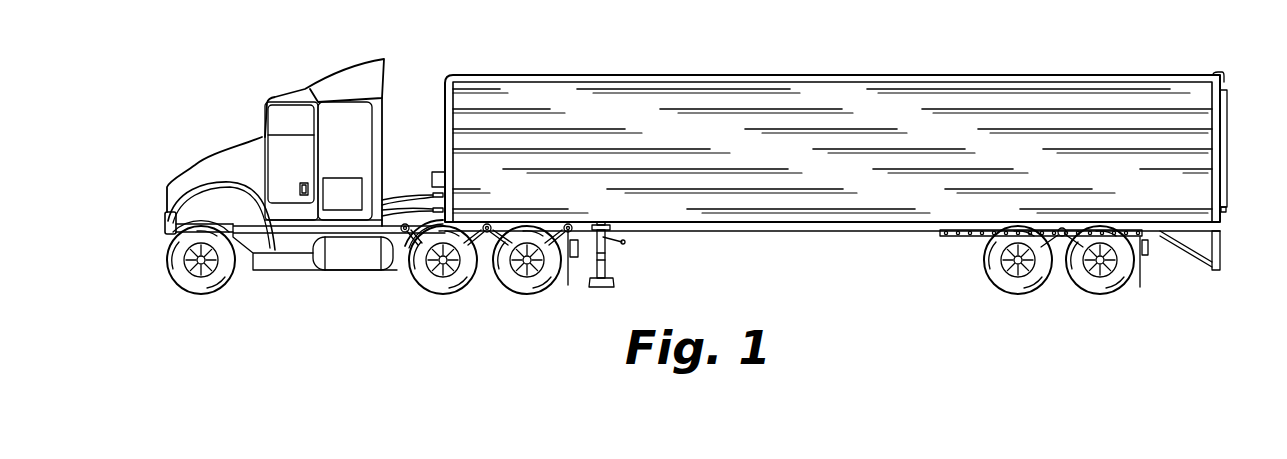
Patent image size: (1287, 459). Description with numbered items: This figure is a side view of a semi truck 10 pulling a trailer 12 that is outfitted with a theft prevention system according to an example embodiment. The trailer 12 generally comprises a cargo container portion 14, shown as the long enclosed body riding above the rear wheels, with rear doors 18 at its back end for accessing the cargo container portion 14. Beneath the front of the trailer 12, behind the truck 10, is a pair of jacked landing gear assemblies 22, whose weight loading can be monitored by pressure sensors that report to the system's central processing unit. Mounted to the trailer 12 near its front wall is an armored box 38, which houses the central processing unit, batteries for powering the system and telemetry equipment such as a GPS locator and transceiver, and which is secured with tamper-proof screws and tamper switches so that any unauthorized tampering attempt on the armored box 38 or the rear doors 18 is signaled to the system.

The semi truck 10 is at (228, 103).
The trailer 12 is at (878, 56).
The cargo container portion 14 is at (1018, 92).
The rear doors 18 is at (1225, 107).
The jacked landing gear assemblies 22 is at (603, 253).
The armored box 38 is at (433, 177).